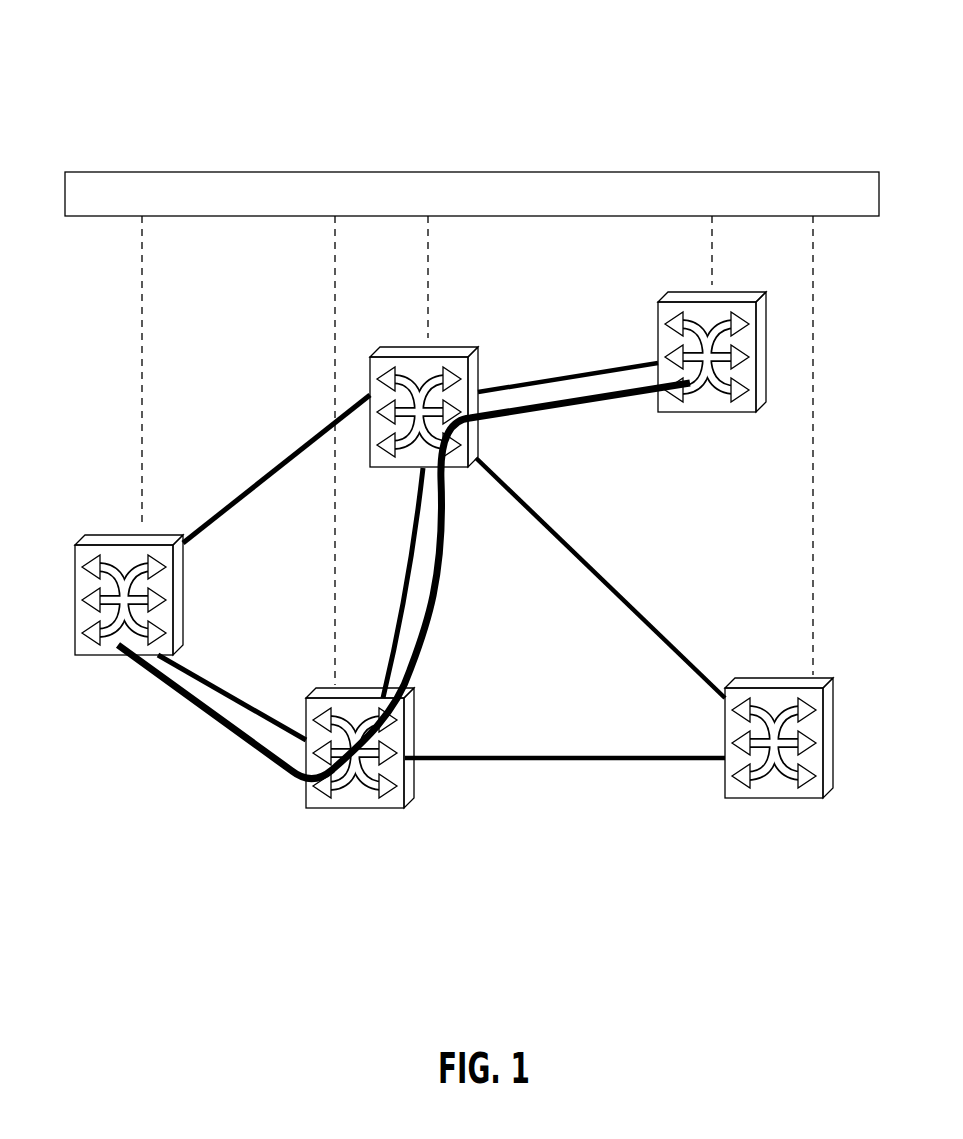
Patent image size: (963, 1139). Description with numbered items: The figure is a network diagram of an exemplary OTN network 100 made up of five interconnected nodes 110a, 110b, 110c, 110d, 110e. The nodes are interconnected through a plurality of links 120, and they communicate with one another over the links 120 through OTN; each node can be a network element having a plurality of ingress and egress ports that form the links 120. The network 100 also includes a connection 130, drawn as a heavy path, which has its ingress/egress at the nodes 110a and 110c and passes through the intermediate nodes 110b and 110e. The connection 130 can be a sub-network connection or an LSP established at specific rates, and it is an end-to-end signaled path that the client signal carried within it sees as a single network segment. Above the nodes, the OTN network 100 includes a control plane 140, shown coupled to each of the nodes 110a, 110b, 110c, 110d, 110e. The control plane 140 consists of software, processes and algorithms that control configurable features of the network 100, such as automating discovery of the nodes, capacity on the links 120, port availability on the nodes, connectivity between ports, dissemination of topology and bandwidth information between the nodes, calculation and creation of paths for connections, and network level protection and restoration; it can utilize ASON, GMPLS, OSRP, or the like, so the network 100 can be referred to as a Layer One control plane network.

The OTN network 100 is at (161, 58).
The node 110a is at (75, 590).
The node 110b is at (458, 345).
The node 110c is at (720, 413).
The node 110d is at (780, 798).
The node 110e is at (305, 798).
The links 120 is at (260, 487).
The connection 130 is at (438, 600).
The control plane 140 is at (623, 172).